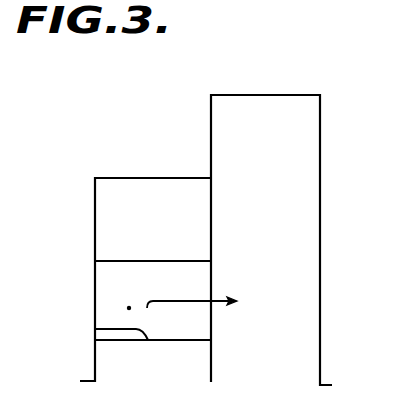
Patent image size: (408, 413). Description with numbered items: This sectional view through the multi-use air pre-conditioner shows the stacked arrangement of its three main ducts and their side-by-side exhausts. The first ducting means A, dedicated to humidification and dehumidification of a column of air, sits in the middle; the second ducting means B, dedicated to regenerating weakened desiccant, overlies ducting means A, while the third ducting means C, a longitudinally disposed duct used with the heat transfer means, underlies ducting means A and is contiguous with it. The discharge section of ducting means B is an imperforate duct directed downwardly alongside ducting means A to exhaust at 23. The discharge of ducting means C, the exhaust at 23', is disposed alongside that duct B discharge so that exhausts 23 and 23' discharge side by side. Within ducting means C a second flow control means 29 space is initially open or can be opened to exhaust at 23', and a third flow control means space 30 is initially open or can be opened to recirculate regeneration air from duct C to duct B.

The first ducting means A is at (174, 222).
The second ducting means B is at (287, 149).
The third ducting means C is at (171, 281).
The third flow control means space 30 is at (129, 308).
The second flow control means space 29 is at (95, 330).
The exhaust 23' is at (153, 362).
The exhaust 23 is at (265, 242).